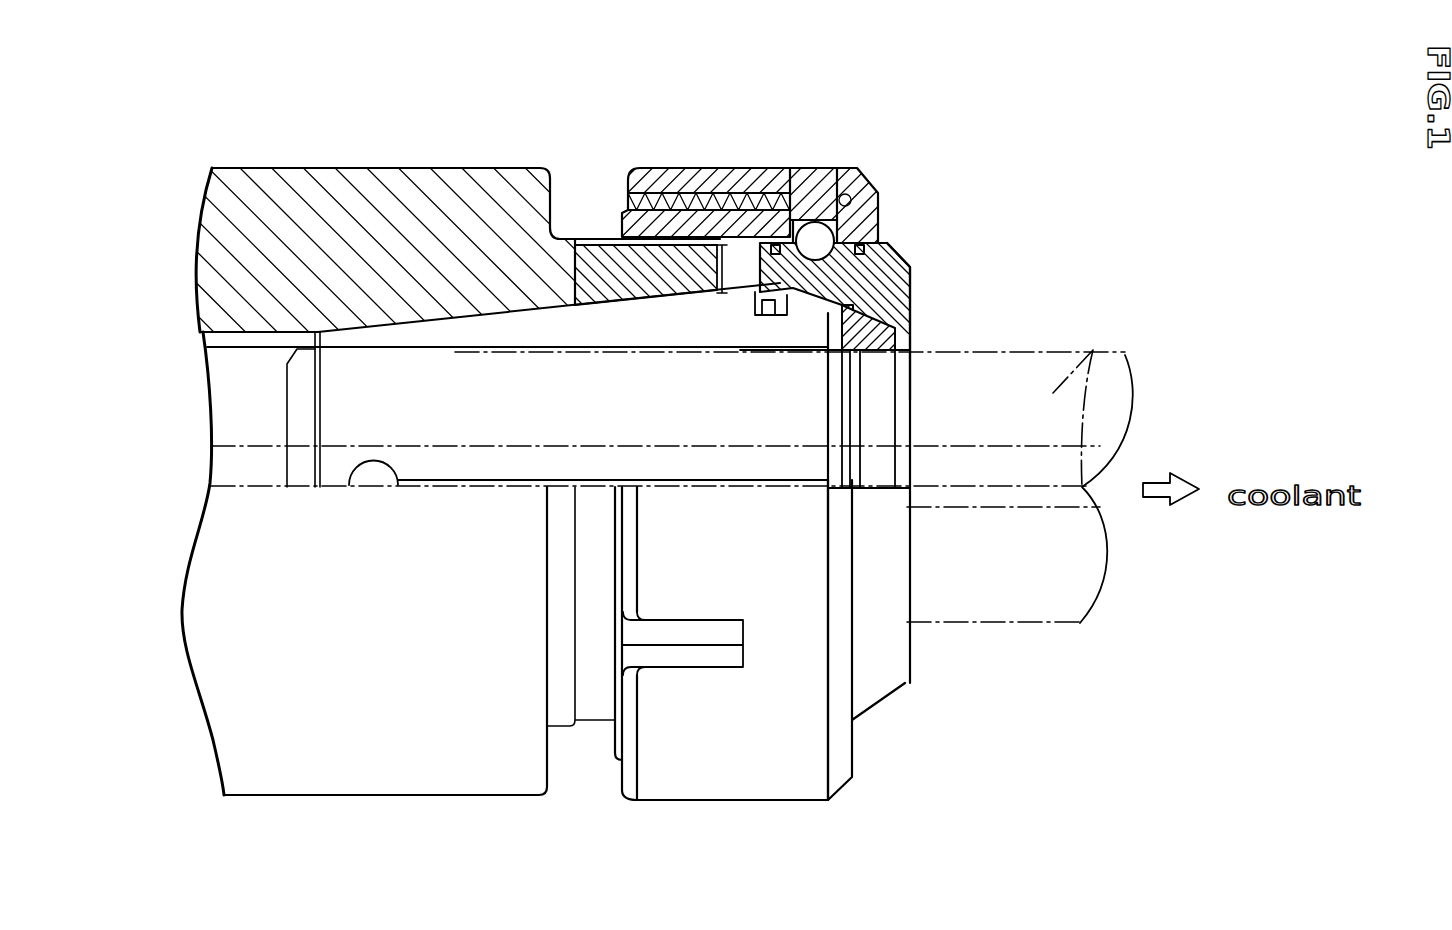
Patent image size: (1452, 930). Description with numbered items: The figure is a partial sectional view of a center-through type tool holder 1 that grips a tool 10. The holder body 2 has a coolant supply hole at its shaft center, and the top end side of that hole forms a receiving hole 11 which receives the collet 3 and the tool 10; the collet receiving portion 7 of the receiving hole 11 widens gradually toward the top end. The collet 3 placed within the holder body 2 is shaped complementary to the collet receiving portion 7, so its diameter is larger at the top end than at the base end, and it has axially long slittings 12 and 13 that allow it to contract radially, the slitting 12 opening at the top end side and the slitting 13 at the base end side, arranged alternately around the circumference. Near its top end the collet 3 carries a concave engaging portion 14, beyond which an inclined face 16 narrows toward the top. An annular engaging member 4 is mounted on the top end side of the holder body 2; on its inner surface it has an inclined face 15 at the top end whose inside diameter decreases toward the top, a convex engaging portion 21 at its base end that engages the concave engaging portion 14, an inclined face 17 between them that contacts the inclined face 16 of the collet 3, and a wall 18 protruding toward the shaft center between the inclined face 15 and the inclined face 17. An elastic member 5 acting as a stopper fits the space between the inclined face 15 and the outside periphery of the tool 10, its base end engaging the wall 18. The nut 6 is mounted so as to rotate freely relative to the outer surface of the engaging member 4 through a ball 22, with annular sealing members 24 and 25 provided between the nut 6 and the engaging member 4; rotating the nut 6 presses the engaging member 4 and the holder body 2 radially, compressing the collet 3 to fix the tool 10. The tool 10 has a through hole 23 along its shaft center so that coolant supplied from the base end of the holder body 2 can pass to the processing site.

The tool holder 1 is at (997, 160).
The holder body 2 is at (232, 757).
The collet 3 is at (576, 322).
The engaging member 4 is at (912, 277).
The elastic member 5 is at (896, 334).
The nut 6 is at (692, 168).
The collet receiving portion 7 is at (573, 318).
The tool 10 is at (1096, 350).
The receiving hole 11 is at (428, 330).
The slitting 12 is at (812, 490).
The slitting 13 is at (487, 323).
The concave engaging portion 14 is at (755, 313).
The inclined face 15 is at (910, 298).
The inclined face 16 is at (910, 268).
The inclined face 17 is at (843, 172).
The wall 18 is at (835, 318).
The convex engaging portion 21 is at (813, 235).
The ball 22 is at (863, 250).
The through hole 23 is at (1082, 485).
The annular sealing member 24 is at (885, 256).
The annular sealing member 25 is at (776, 245).